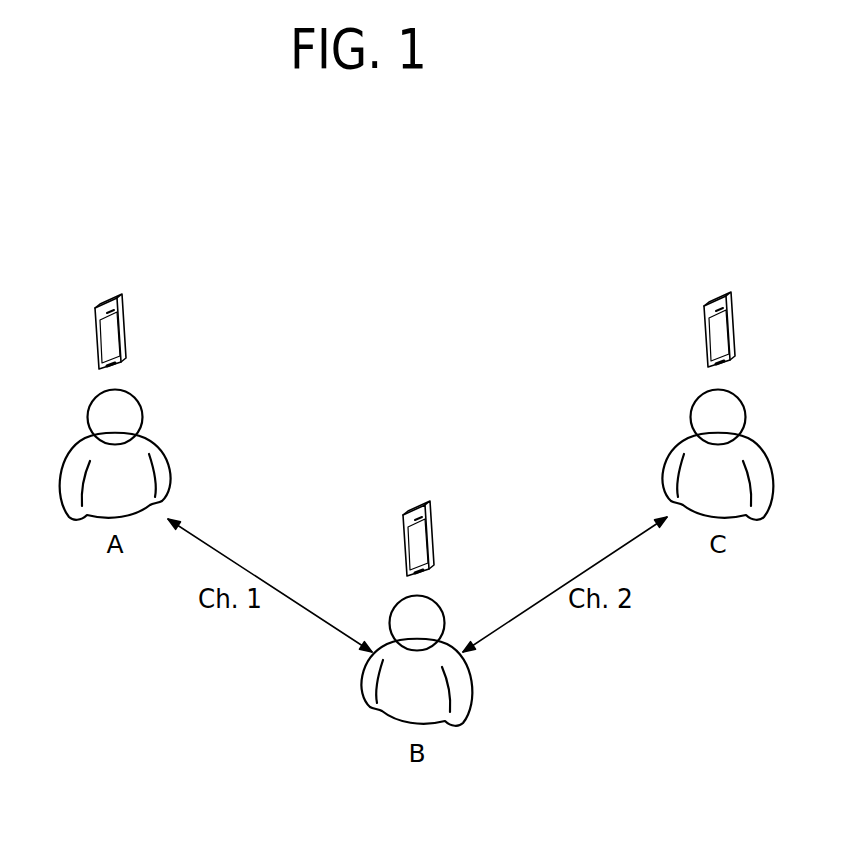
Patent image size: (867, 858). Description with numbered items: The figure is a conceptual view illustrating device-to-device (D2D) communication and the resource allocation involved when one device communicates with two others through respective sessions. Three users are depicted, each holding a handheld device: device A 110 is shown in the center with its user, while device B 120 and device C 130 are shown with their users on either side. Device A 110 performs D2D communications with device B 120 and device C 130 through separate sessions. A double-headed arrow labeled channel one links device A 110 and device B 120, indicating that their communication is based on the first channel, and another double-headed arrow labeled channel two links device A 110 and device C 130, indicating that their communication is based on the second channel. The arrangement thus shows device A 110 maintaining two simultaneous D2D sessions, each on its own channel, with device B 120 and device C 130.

The device A 110 is at (420, 508).
The device B 120 is at (105, 300).
The device C 130 is at (722, 299).